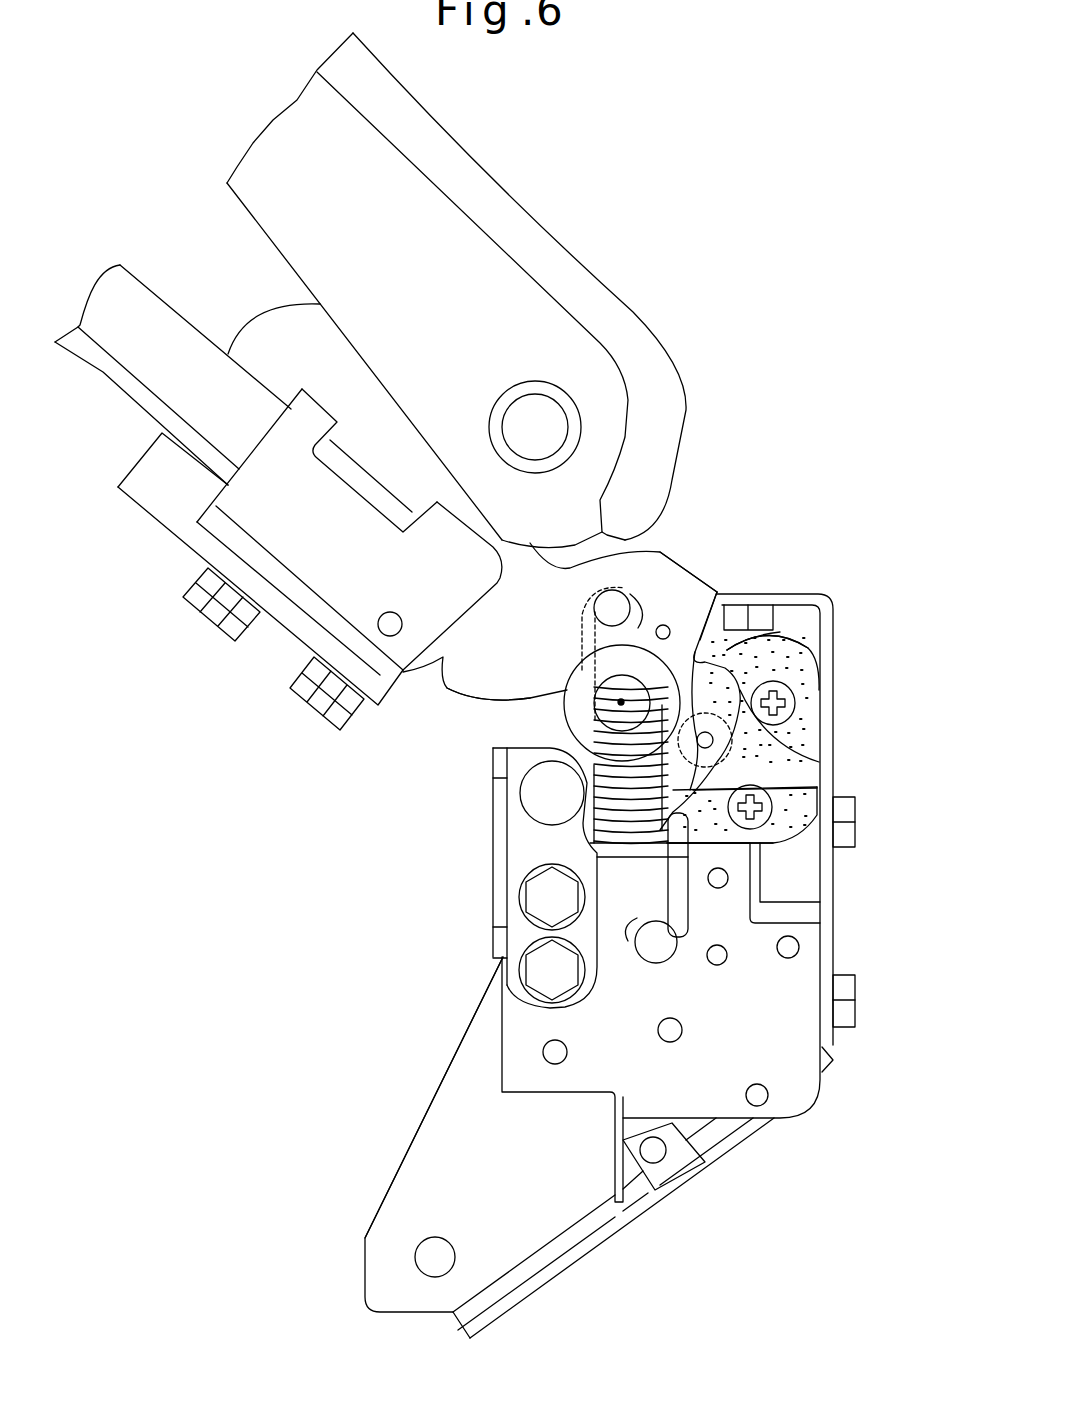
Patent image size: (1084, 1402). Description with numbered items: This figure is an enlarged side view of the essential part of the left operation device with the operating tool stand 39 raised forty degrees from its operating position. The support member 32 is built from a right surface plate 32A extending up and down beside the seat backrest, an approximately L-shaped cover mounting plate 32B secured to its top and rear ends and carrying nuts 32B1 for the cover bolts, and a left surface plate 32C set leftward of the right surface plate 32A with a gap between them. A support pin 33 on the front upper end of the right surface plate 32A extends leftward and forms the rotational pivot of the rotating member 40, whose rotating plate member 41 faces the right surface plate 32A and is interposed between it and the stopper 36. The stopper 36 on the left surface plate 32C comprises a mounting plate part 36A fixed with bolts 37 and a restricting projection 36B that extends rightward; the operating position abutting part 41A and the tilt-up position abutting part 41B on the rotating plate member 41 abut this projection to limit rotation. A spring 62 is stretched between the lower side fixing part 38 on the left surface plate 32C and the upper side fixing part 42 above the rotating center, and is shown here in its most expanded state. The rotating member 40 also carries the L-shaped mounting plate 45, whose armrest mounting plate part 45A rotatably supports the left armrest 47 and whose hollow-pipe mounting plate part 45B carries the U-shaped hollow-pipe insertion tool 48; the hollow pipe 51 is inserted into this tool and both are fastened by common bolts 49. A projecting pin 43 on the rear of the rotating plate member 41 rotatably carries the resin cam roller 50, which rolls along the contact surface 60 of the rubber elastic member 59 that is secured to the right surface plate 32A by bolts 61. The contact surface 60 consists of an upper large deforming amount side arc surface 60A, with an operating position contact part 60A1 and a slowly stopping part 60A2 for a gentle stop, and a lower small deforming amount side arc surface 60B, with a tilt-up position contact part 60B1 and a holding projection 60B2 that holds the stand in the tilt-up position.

The support member 32 is at (394, 1168).
The right surface plate 32A is at (803, 857).
The cover mounting plate 32B is at (822, 943).
The nuts 32B1 is at (842, 823).
The left surface plate 32C is at (735, 1070).
The support pin 33 is at (620, 702).
The stopper 36 is at (527, 933).
The mounting plate part 36A is at (535, 848).
The restricting projection 36B is at (522, 800).
The bolts 37 is at (550, 897).
The lower side fixing part 38 is at (657, 945).
The operating tool stand 39 is at (690, 563).
The rotating member 40 is at (167, 533).
The rotating plate member 41 is at (482, 648).
The operating position abutting part 41A is at (507, 697).
The tilt-up position abutting part 41B is at (658, 808).
The upper side fixing part 42 is at (612, 610).
The projecting pin 43 is at (740, 730).
The mounting plate 45 is at (370, 417).
The armrest mounting plate part 45A is at (303, 367).
The hollow-pipe mounting plate part 45B is at (140, 493).
The left armrest 47 is at (487, 265).
The hollow-pipe insertion tool 48 is at (335, 560).
The bolts 49 is at (218, 608).
The cam roller 50 is at (740, 737).
The hollow pipe 51 is at (155, 355).
The elastic member 59 is at (778, 653).
The contact surface 60 is at (745, 697).
The large deforming amount side arc surface 60A is at (738, 670).
The operating position contact part 60A1 is at (755, 627).
The slowly stopping part 60A2 is at (711, 652).
The small deforming amount side arc surface 60B is at (732, 762).
The tilt-up position contact part 60B1 is at (675, 830).
The holding projection 60B2 is at (697, 790).
The bolts 61 is at (783, 695).
The spring 62 is at (665, 690).